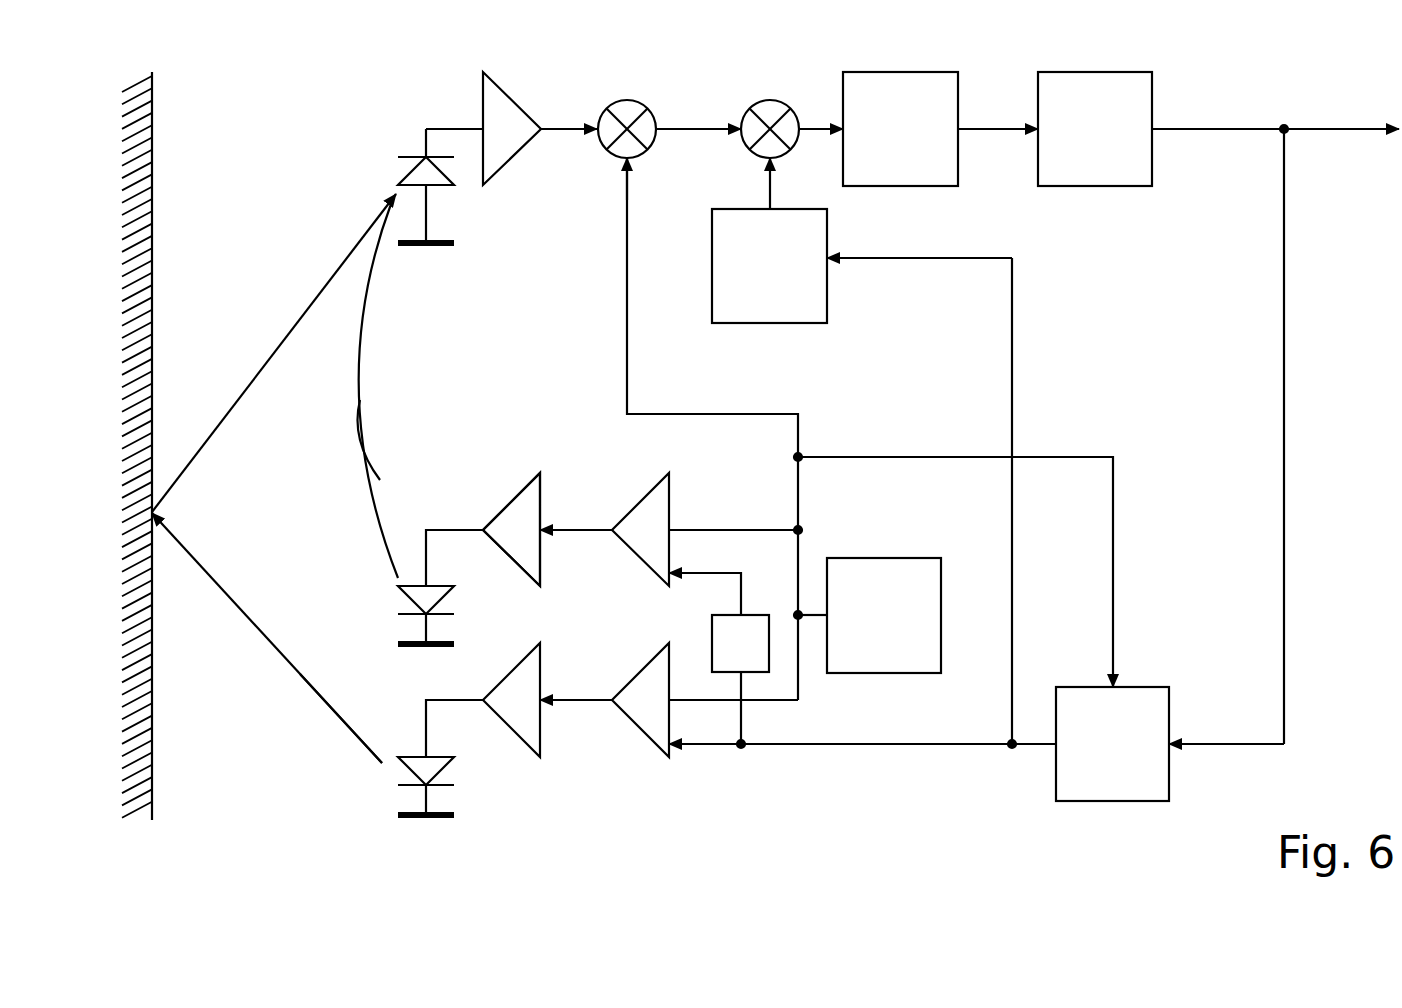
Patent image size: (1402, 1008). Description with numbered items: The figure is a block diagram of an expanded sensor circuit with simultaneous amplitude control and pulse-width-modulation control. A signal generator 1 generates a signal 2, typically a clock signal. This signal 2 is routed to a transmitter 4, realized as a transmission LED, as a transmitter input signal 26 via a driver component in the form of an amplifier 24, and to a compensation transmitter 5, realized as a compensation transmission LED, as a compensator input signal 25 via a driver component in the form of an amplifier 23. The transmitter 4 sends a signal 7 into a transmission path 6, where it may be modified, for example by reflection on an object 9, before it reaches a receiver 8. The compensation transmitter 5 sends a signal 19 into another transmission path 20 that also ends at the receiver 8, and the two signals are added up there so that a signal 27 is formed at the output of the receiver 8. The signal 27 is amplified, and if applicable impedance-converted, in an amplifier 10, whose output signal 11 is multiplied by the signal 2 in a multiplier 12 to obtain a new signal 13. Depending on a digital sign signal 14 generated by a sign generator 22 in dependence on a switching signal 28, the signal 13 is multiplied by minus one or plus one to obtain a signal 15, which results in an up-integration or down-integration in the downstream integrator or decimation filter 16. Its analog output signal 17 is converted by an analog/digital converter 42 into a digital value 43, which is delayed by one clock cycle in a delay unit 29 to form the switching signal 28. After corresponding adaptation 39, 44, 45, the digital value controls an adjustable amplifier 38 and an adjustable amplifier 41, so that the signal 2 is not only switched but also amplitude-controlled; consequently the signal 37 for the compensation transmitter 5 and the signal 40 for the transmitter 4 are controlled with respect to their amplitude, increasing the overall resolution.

The signal generator 1 is at (884, 615).
The signal 2 is at (868, 429).
The transmitter 4 is at (435, 778).
The compensation transmitter 5 is at (435, 606).
The transmission path 6 is at (268, 322).
The signal 7 is at (341, 719).
The receiver 8 is at (424, 185).
The object 9 is at (146, 446).
The amplifier 10 is at (512, 128).
The output signal 11 is at (569, 114).
The multiplier 12 is at (627, 113).
The signal 13 is at (698, 114).
The digital sign signal 14 is at (784, 183).
The signal 15 is at (792, 121).
The integrator or decimation filter 16 is at (900, 114).
The analog output signal 17 is at (998, 114).
The signal 19 is at (352, 452).
The transmission path 20 is at (378, 391).
The sign generator 22 is at (769, 280).
The amplifier 23 is at (511, 529).
The amplifier 24 is at (511, 700).
The compensator input signal 25 is at (454, 546).
The transmitter input signal 26 is at (454, 718).
The signal 27 is at (454, 113).
The switching signal 28 is at (921, 490).
The delay unit 29 is at (1112, 744).
The signal 37 is at (528, 527).
The adjustable amplifier 38 is at (604, 527).
The adaptation 39 is at (733, 514).
The signal 40 is at (669, 691).
The adjustable amplifier 41 is at (640, 709).
The analog/digital converter 42 is at (1095, 114).
The digital value 43 is at (1275, 421).
The adaptation 44 is at (862, 733).
The adaptation 45 is at (719, 658).